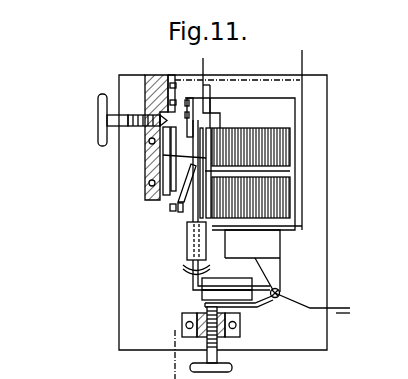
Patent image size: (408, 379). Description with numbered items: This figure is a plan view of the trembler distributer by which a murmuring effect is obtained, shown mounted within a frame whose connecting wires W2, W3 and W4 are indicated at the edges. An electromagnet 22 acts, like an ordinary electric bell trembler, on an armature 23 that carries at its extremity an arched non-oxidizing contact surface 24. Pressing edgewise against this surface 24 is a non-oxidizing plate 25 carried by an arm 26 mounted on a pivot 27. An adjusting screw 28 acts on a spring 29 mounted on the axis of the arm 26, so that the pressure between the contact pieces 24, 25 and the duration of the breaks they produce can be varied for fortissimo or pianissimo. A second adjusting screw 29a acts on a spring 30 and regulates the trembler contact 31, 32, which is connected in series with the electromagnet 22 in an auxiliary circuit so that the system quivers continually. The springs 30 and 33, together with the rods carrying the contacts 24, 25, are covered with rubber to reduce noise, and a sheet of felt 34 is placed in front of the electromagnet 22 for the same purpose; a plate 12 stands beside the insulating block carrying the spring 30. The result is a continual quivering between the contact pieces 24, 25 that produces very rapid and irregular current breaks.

The contact plate 12 is at (172, 47).
The electromagnet 22 is at (266, 140).
The armature 23 is at (195, 206).
The non-oxidizing contact surface 24 is at (183, 267).
The non-oxidizing plate 25 is at (190, 283).
The arm 26 is at (237, 290).
The pivot 27 is at (279, 291).
The adjusting screw 28 is at (214, 338).
The spring 29 is at (253, 306).
The second adjusting screw 29a is at (135, 115).
The spring 30 is at (159, 84).
The contact 31 is at (170, 207).
The contact 32 is at (178, 208).
The spring 33 is at (196, 182).
The sheet of felt 34 is at (163, 155).
The wire W2 is at (215, 54).
The wire W3 is at (312, 342).
The wire W4 is at (302, 50).